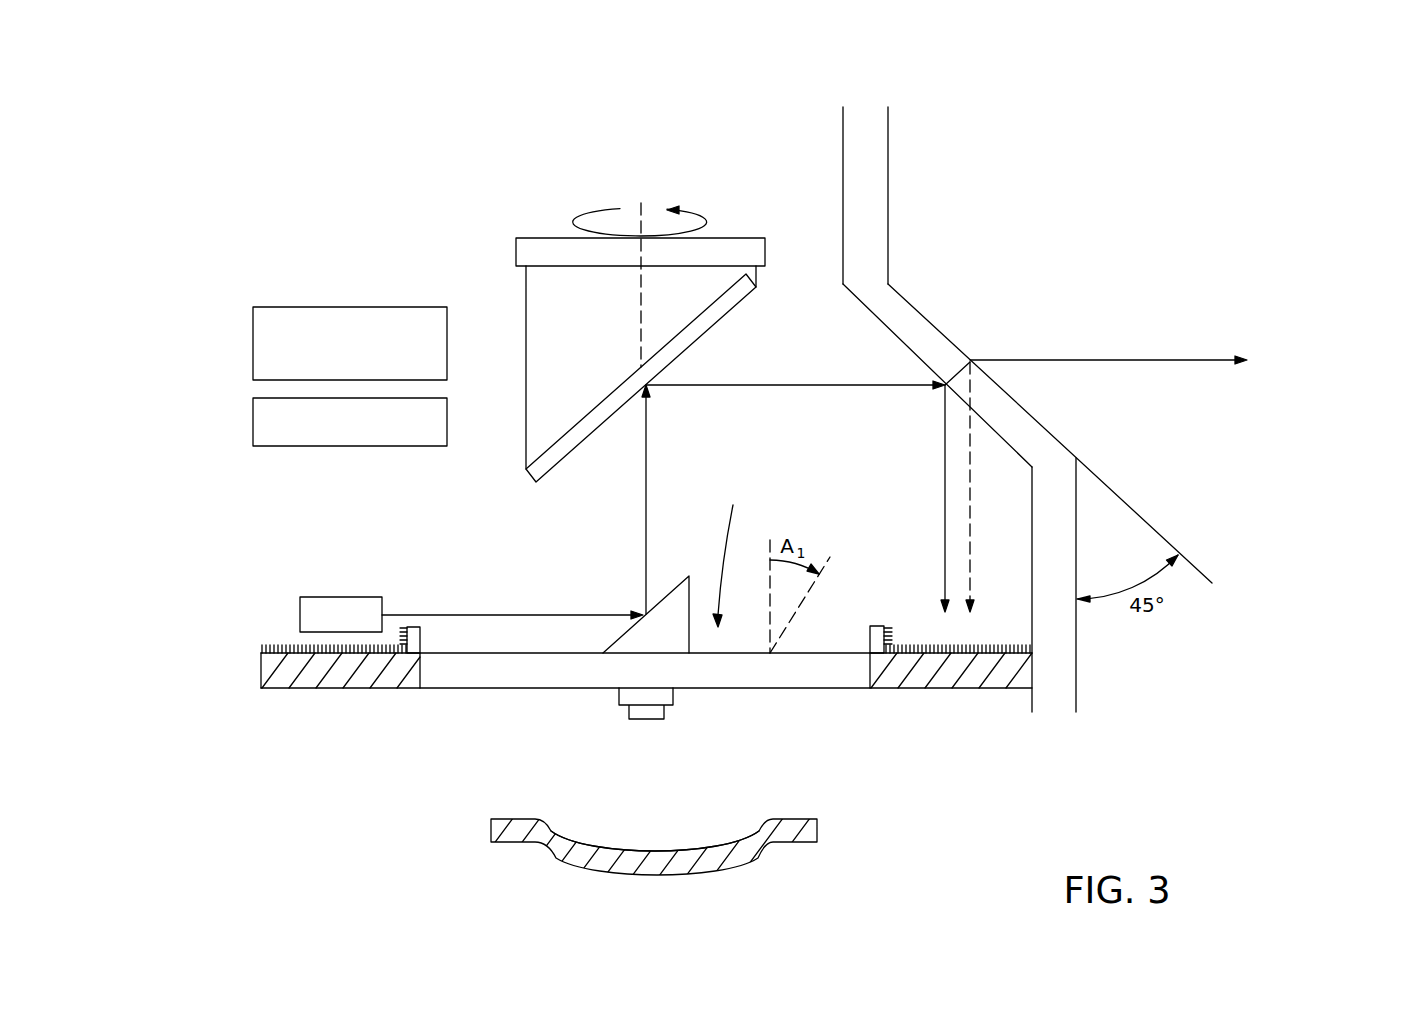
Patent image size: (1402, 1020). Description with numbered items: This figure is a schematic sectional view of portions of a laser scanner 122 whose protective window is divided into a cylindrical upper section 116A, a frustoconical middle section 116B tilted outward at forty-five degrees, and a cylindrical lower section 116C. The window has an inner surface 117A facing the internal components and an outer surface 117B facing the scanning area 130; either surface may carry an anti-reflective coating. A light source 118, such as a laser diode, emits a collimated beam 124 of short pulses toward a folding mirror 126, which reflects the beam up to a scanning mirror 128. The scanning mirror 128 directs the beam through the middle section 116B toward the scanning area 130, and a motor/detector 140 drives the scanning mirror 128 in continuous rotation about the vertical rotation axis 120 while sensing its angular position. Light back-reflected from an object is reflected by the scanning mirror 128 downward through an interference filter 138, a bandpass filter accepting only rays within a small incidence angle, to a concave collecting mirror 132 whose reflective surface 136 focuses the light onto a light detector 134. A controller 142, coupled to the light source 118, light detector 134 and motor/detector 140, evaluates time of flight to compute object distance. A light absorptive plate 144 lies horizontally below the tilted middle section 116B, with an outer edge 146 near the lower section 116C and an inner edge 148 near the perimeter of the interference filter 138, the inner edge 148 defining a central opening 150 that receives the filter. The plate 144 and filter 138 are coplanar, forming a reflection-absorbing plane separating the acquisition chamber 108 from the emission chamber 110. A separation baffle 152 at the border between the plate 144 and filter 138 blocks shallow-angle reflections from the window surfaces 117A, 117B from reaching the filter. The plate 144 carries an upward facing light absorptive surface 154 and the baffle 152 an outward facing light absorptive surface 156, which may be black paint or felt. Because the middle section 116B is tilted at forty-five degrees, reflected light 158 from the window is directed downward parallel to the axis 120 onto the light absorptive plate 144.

The acquisition chamber 108 is at (323, 786).
The emission chamber 110 is at (320, 506).
The upper section 116A is at (888, 160).
The middle section 116B is at (950, 335).
The lower section 116C is at (1077, 650).
The inner surface 117A is at (888, 330).
The outer surface 117B is at (923, 312).
The light source 118 is at (333, 602).
The vertical rotation axis 120 is at (642, 210).
The laser scanner 122 is at (1147, 150).
The collimated beam 124 is at (519, 613).
The folding mirror 126 is at (673, 613).
The scanning mirror 128 is at (713, 326).
The scanning area 130 is at (1322, 363).
The collecting mirror 132 is at (508, 832).
The light detector 134 is at (635, 695).
The reflective surface 136 is at (720, 843).
The interference filter 138 is at (768, 668).
The motor/detector 140 is at (253, 343).
The controller 142 is at (253, 421).
The light absorptive plate 144 is at (282, 687).
The outer edge 146 is at (260, 670).
The inner edge 148 is at (422, 672).
The central opening 150 is at (733, 553).
The separation baffle 152 is at (415, 633).
The light absorptive surface 154 is at (930, 645).
The light absorptive surface 156 is at (403, 633).
The reflected light 158 is at (945, 478).